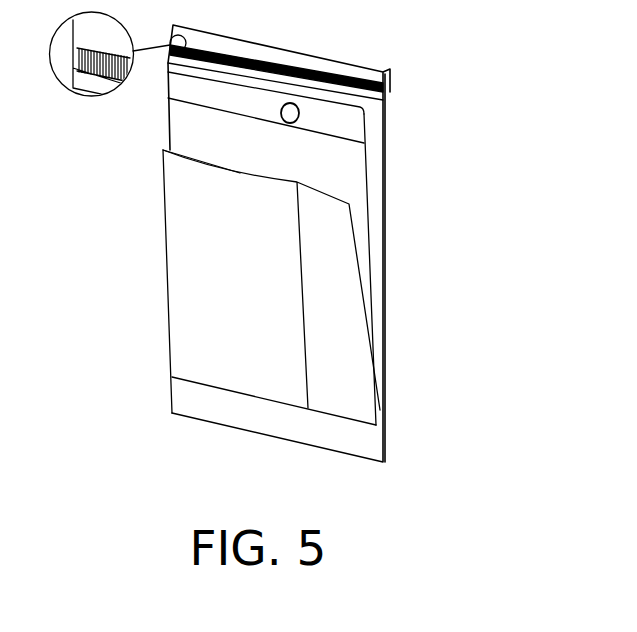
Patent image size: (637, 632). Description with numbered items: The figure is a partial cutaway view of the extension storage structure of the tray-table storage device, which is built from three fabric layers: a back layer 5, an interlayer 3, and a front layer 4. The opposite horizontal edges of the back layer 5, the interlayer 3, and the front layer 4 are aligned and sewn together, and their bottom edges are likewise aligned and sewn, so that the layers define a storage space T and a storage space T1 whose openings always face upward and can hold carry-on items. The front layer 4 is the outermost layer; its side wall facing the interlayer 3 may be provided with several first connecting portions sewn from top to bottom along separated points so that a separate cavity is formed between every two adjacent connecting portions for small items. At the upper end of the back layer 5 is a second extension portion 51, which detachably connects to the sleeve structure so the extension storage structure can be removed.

The back layer 5 is at (382, 177).
The second extension portion 51 is at (383, 74).
The interlayer 3 is at (372, 253).
The front layer 4 is at (372, 327).
The storage space T is at (374, 225).
The storage space T1 is at (215, 162).